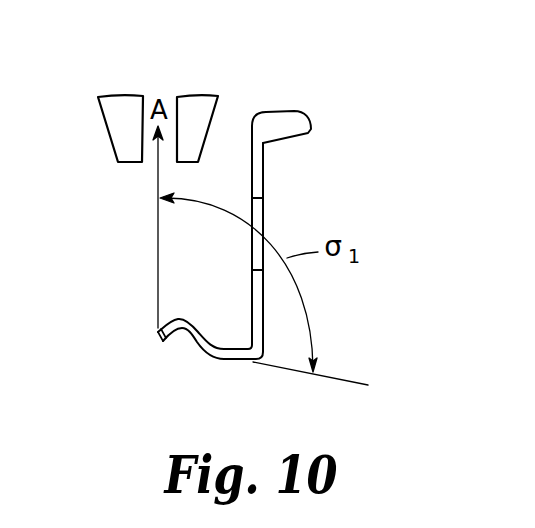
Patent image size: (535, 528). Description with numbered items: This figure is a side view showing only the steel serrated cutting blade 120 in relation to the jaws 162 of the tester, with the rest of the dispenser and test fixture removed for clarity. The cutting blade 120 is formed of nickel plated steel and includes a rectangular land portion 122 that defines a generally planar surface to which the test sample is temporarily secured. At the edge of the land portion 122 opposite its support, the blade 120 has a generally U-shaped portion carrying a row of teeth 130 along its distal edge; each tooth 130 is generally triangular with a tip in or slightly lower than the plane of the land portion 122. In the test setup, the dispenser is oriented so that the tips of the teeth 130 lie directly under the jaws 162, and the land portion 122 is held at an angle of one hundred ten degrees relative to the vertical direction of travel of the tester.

The steel serrated cutting blade 120 is at (241, 240).
The land portion 122 is at (218, 360).
The teeth 130 is at (158, 334).
The jaws 162 is at (143, 97).